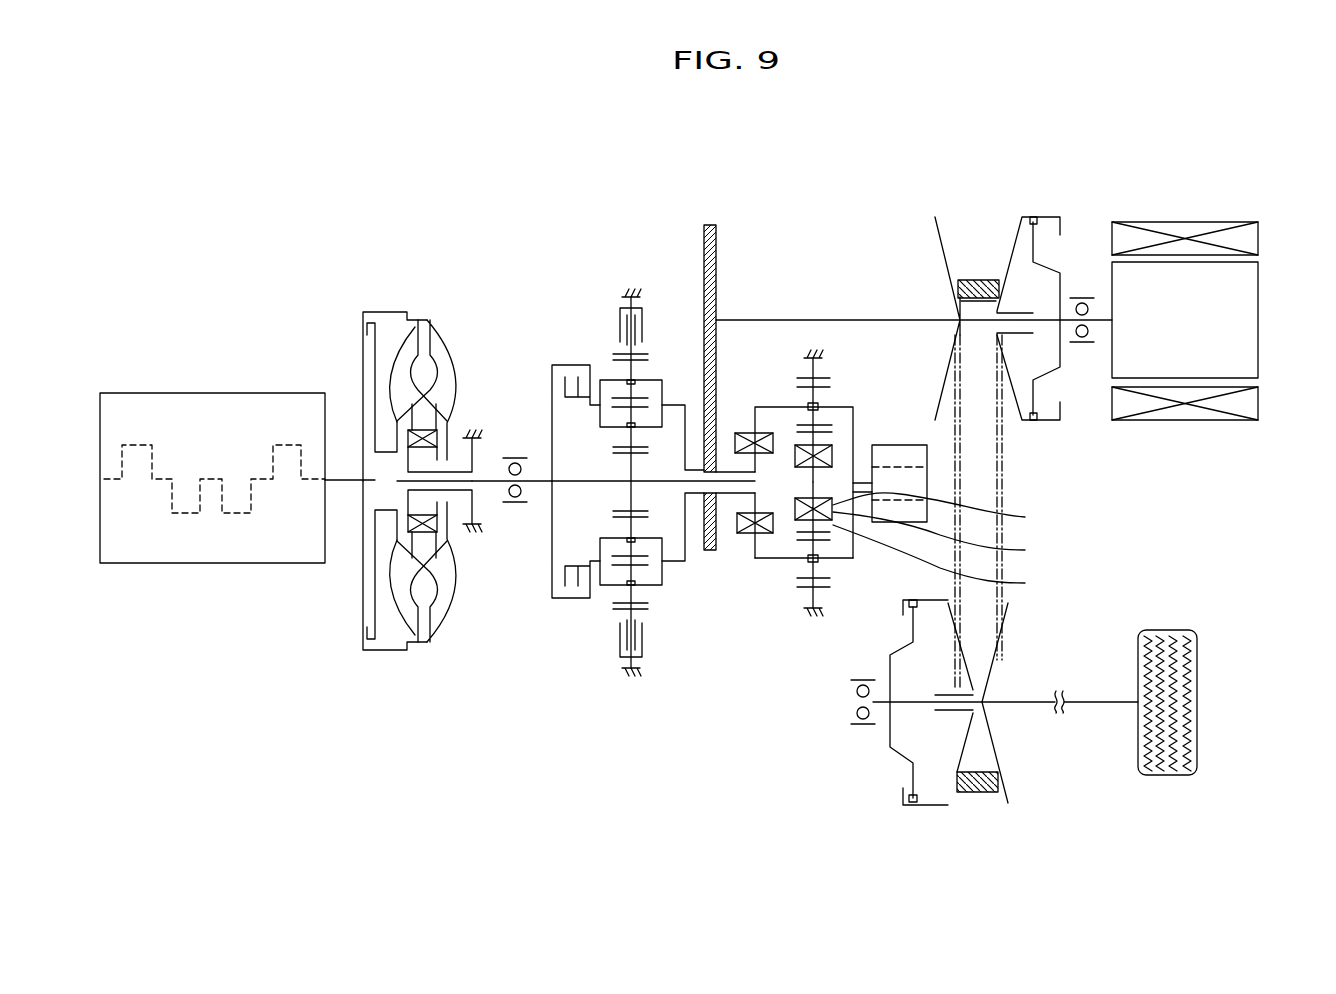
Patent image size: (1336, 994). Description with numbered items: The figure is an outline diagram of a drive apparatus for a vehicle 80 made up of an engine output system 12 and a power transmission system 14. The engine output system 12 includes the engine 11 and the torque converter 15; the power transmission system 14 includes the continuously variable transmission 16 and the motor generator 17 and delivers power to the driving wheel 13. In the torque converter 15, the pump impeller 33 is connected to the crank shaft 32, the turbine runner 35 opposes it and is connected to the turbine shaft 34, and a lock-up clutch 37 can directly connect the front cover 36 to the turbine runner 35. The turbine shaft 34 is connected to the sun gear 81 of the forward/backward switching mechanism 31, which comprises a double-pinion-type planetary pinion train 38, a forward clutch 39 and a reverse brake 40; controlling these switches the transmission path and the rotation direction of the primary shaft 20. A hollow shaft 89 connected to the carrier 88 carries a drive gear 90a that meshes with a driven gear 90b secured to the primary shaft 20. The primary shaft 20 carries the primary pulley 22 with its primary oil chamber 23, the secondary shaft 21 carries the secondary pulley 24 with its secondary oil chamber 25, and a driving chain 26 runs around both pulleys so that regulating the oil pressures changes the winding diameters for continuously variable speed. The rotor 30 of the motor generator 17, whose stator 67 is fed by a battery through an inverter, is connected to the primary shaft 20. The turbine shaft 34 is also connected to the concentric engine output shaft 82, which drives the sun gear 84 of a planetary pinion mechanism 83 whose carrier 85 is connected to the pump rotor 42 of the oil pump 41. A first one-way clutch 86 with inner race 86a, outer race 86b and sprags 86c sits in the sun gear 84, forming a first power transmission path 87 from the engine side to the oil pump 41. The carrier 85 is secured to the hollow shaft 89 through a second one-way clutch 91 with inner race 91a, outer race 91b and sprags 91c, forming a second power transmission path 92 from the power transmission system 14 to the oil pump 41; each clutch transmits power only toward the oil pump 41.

The drive apparatus for a vehicle 80 is at (165, 278).
The engine 11 is at (129, 565).
The engine output system 12 is at (262, 370).
The crank shaft 32 is at (345, 482).
The torque converter 15 is at (438, 308).
The lock-up clutch 37 is at (360, 314).
The front cover 36 is at (353, 357).
The turbine runner 35 is at (402, 347).
The pump impeller 33 is at (449, 355).
The turbine shaft 34 is at (488, 480).
The forward/backward switching mechanism 31 is at (600, 307).
The forward clutch 39 is at (580, 365).
The reverse brake 40 is at (643, 313).
The double-pinion-type planetary pinion train 38 is at (606, 600).
The sun gear 81 is at (617, 443).
The engine output shaft 82 is at (665, 478).
The carrier 88 is at (678, 403).
The driven gear 90b is at (717, 240).
The drive gear 90a is at (709, 551).
The hollow shaft 89 is at (723, 470).
The carrier 85 is at (785, 406).
The second power transmission path 92 is at (748, 430).
The planetary pinion mechanism 83 is at (838, 404).
The sun gear 84 is at (830, 418).
The first power transmission path 87 is at (835, 570).
The oil pump 41 is at (917, 446).
The pump rotor 42 is at (897, 478).
The primary shaft 20 is at (847, 320).
The first one-way clutch 86 is at (970, 546).
The inner race 86a is at (951, 512).
The outer race 86b is at (951, 561).
The sprags 86c is at (951, 538).
The second one-way clutch 91 is at (755, 612).
The inner race 91a is at (746, 500).
The outer race 91b is at (770, 560).
The sprags 91c is at (753, 536).
The power transmission system 14 is at (1142, 127).
The continuously variable transmission 16 is at (948, 208).
The primary pulley 22 is at (1017, 225).
The driving chain 26 is at (985, 280).
The primary oil chamber 23 is at (1047, 280).
The motor generator 17 is at (1235, 207).
The rotor 30 is at (1245, 307).
The stator 67 is at (1245, 403).
The secondary pulley 24 is at (962, 728).
The secondary oil chamber 25 is at (912, 747).
The secondary shaft 21 is at (1013, 700).
The driving wheel 13 is at (1167, 630).